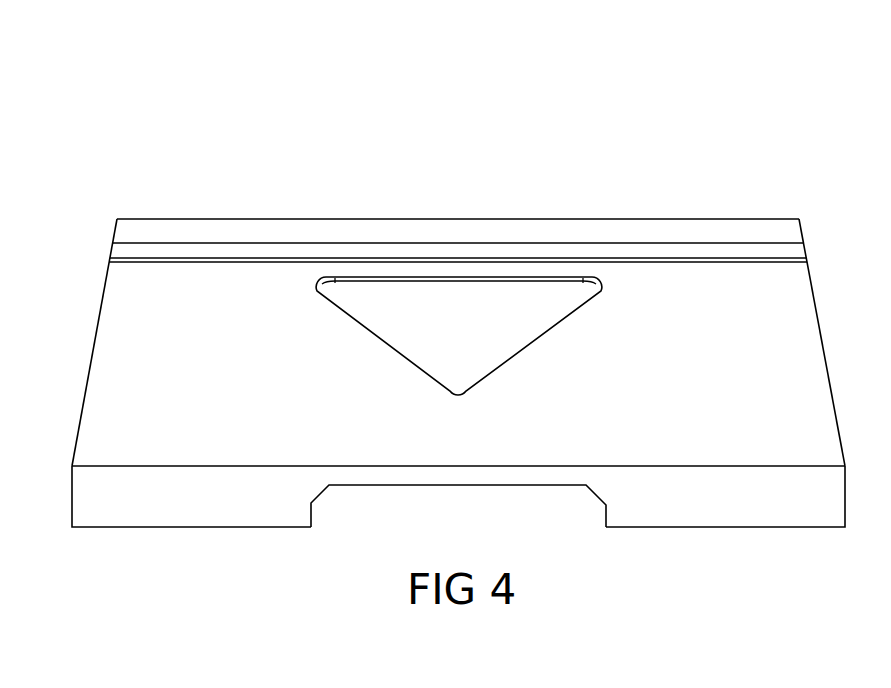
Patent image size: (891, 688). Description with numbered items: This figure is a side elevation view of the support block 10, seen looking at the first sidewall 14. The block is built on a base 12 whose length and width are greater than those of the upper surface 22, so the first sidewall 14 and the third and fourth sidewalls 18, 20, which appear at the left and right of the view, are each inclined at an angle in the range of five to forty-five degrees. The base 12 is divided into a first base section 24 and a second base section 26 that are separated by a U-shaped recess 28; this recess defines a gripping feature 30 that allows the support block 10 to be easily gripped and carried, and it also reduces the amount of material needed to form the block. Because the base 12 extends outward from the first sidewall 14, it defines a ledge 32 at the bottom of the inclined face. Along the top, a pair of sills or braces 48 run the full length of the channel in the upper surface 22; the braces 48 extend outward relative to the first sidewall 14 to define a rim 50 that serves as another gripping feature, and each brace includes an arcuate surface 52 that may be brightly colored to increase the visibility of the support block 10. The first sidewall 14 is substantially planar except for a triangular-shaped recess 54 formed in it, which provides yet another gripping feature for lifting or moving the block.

The support block 10 is at (673, 106).
The base 12 is at (767, 538).
The first sidewall 14 is at (727, 376).
The third sidewall 18 is at (826, 364).
The fourth sidewall 20 is at (103, 297).
The upper surface 22 is at (744, 207).
The first base section 24 is at (648, 528).
The second base section 26 is at (192, 528).
The U-shaped recess 28 is at (378, 486).
The gripping feature 30 is at (531, 503).
The ledge 32 is at (128, 466).
The brace 48 is at (183, 230).
The rim 50 is at (260, 260).
The arcuate surface 52 is at (793, 230).
The triangular-shaped recess 54 is at (470, 338).